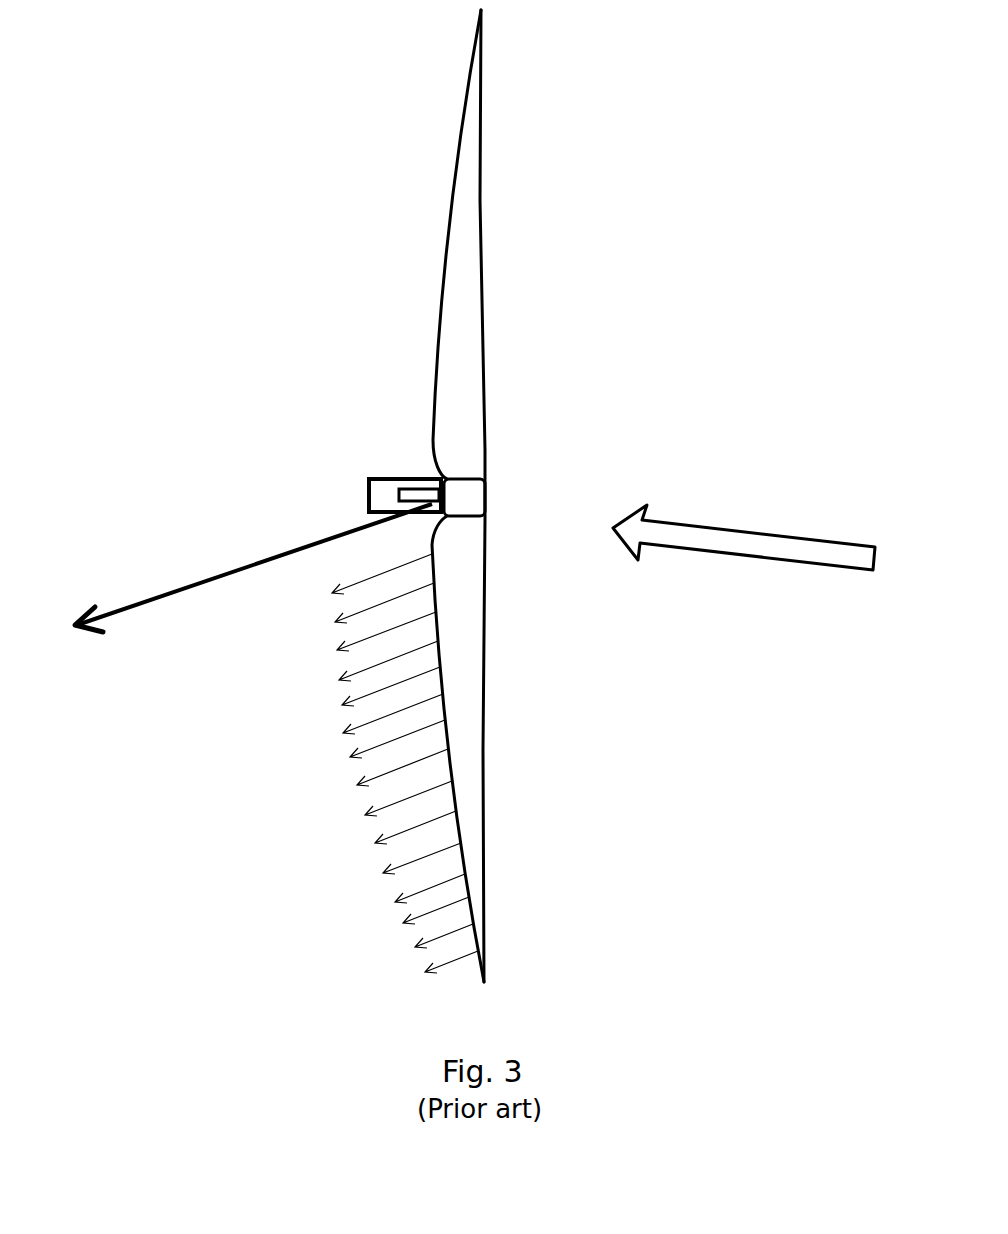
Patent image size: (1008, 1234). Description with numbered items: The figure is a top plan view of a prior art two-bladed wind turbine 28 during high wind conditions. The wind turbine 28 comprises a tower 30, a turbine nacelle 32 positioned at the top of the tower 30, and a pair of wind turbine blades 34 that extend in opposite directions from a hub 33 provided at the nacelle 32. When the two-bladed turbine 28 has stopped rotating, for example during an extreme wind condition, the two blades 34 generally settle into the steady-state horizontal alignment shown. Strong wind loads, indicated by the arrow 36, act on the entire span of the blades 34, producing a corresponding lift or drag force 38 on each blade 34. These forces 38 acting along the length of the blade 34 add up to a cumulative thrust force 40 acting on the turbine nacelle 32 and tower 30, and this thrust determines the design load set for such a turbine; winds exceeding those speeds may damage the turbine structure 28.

The wind turbine 28 is at (192, 220).
The tower 30 is at (421, 491).
The turbine nacelle 32 is at (368, 497).
The hub 33 is at (465, 500).
The wind turbine blades 34 is at (463, 190).
The wind loads 36 is at (744, 555).
The lift or drag force 38 is at (379, 763).
The cumulative thrust force 40 is at (240, 585).